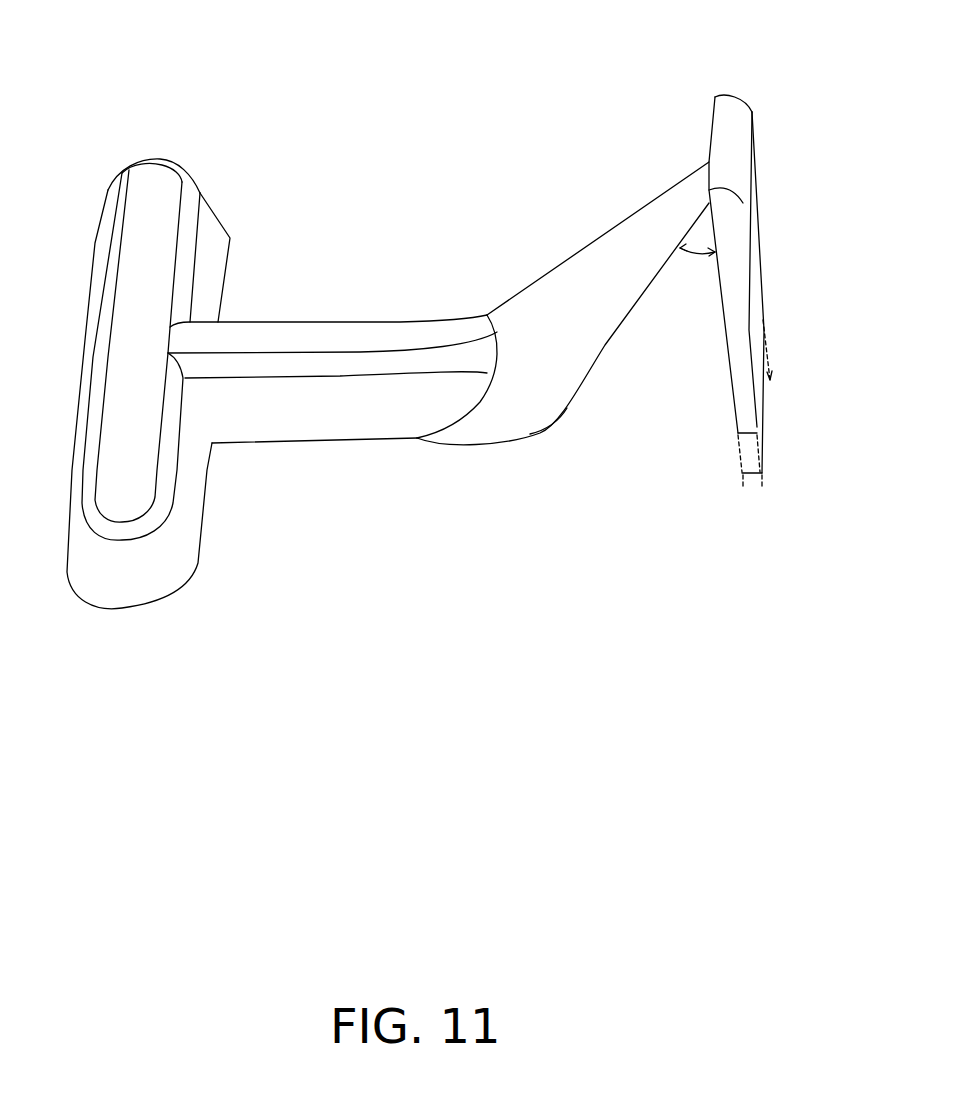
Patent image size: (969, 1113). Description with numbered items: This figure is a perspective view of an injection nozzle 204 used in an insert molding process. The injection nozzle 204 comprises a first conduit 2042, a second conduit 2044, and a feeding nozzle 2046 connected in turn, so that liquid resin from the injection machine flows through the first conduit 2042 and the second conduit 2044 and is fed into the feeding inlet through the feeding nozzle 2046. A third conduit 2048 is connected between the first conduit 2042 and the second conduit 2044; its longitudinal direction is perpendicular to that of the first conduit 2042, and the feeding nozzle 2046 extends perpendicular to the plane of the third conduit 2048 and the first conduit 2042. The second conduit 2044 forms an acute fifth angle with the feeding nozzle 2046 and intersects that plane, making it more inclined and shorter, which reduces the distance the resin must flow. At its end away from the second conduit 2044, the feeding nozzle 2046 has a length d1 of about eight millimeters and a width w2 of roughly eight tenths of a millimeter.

The injection nozzle 204 is at (468, 52).
The first conduit 2042 is at (142, 200).
The second conduit 2044 is at (620, 248).
The feeding nozzle 2046 is at (737, 250).
The third conduit 2048 is at (278, 333).
The length of the feeding nozzle end d1 is at (765, 420).
The width of the feeding nozzle end w2 is at (752, 473).